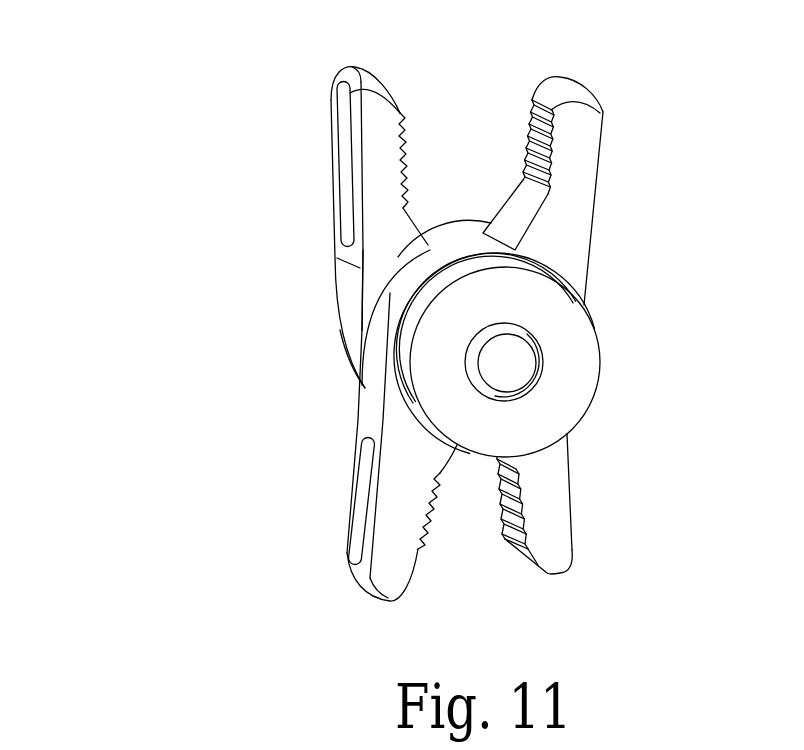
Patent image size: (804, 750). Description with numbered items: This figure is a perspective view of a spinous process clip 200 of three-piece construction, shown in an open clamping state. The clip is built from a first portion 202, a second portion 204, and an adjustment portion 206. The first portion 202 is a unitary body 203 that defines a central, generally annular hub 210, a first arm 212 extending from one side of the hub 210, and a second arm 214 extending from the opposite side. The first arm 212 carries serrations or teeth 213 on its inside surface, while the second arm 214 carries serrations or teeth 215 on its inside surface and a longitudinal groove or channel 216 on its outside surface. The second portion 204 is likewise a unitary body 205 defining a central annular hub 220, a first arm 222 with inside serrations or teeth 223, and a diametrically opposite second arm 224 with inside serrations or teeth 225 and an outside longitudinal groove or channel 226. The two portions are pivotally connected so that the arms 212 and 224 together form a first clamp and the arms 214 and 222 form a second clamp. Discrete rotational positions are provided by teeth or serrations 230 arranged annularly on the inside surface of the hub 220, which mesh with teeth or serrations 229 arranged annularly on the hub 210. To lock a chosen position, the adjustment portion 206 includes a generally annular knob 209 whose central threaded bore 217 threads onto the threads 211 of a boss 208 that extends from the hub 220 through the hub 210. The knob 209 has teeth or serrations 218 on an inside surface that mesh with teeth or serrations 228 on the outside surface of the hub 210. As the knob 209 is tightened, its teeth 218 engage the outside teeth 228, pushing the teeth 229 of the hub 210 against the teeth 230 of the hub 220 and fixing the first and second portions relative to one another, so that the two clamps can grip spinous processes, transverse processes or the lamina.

The spinous process clip 200 is at (172, 100).
The first portion 202 is at (628, 223).
The unitary body 203 is at (341, 429).
The second portion 204 is at (292, 228).
The unitary body 205 is at (334, 291).
The adjustment portion 206 is at (632, 332).
The boss 208 is at (510, 345).
The knob 209 is at (575, 405).
The hub 210 is at (452, 247).
The threads 211 is at (545, 363).
The first arm 212 is at (603, 115).
The serrations or teeth 213 is at (532, 122).
The second arm 214 is at (390, 586).
The serrations or teeth 215 is at (428, 547).
The longitudinal groove or channel 216 is at (362, 523).
The threaded bore 217 is at (505, 385).
The teeth or serrations 218 is at (502, 210).
The hub 220 is at (370, 288).
The first arm 222 is at (555, 552).
The serrations or teeth 223 is at (497, 497).
The second arm 224 is at (367, 102).
The serrations or teeth 225 is at (398, 114).
The longitudinal groove or channel 226 is at (335, 122).
The teeth or serrations 228 is at (411, 298).
The teeth or serrations 229 is at (415, 222).
The teeth or serrations 230 is at (358, 322).